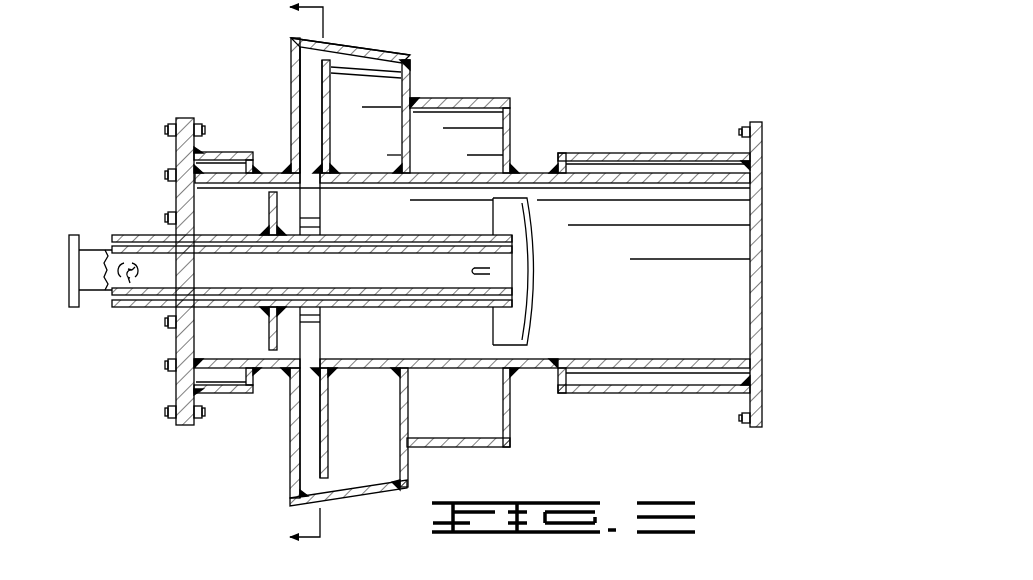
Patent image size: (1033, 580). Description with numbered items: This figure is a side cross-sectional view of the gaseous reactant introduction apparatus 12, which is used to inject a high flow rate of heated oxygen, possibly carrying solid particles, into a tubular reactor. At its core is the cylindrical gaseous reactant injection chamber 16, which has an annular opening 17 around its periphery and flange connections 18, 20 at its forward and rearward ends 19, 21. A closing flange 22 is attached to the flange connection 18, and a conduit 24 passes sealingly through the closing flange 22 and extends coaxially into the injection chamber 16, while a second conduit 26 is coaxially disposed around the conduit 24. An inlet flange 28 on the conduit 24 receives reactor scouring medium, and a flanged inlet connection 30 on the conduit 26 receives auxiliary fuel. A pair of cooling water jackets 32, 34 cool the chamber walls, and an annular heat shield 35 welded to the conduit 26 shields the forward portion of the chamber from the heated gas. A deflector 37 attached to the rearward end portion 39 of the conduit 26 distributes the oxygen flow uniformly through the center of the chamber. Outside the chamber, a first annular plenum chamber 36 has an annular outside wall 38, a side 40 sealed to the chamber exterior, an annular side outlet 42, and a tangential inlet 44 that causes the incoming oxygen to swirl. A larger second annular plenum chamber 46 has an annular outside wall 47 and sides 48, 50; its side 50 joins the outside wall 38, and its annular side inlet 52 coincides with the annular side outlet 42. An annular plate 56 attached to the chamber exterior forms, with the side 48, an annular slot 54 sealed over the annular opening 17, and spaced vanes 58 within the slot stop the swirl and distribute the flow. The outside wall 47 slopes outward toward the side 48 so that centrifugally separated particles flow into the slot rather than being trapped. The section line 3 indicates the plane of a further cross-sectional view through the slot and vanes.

The section line 3- 3 is at (292, 276).
The gaseous reactant introduction apparatus 12 is at (606, 96).
The cylindrical gaseous reactant injection chamber 16 is at (529, 165).
The annular opening 17 is at (312, 203).
The flange connection 18 is at (182, 117).
The forward end 19 is at (200, 358).
The flange connection 20 is at (755, 121).
The rearward end 21 is at (735, 185).
The closing flange 22 is at (178, 118).
The conduit 24 is at (96, 252).
The second conduit 26 is at (125, 233).
The inlet flange 28 is at (73, 307).
The flanged inlet connection 30 is at (132, 317).
The cooling water jacket 32 is at (226, 150).
The cooling water jacket 34 is at (610, 153).
The annular heat shield 35 is at (266, 203).
The first annular plenum chamber 36 is at (447, 91).
The deflector 37 is at (543, 228).
The annular outside wall 38 is at (487, 100).
The rearward end portion 39 is at (490, 307).
The side 40 is at (510, 122).
The annular side outlet 42 is at (408, 140).
The tangential inlet 44 is at (400, 437).
The second annular plenum chamber 46 is at (391, 35).
The annular outside wall 47 is at (337, 35).
The side 48 is at (293, 78).
The side 50 is at (412, 63).
The annular side inlet 52 is at (403, 122).
The annular slot 54 is at (310, 72).
The annular plate 56 is at (327, 147).
The vanes 58 is at (310, 143).